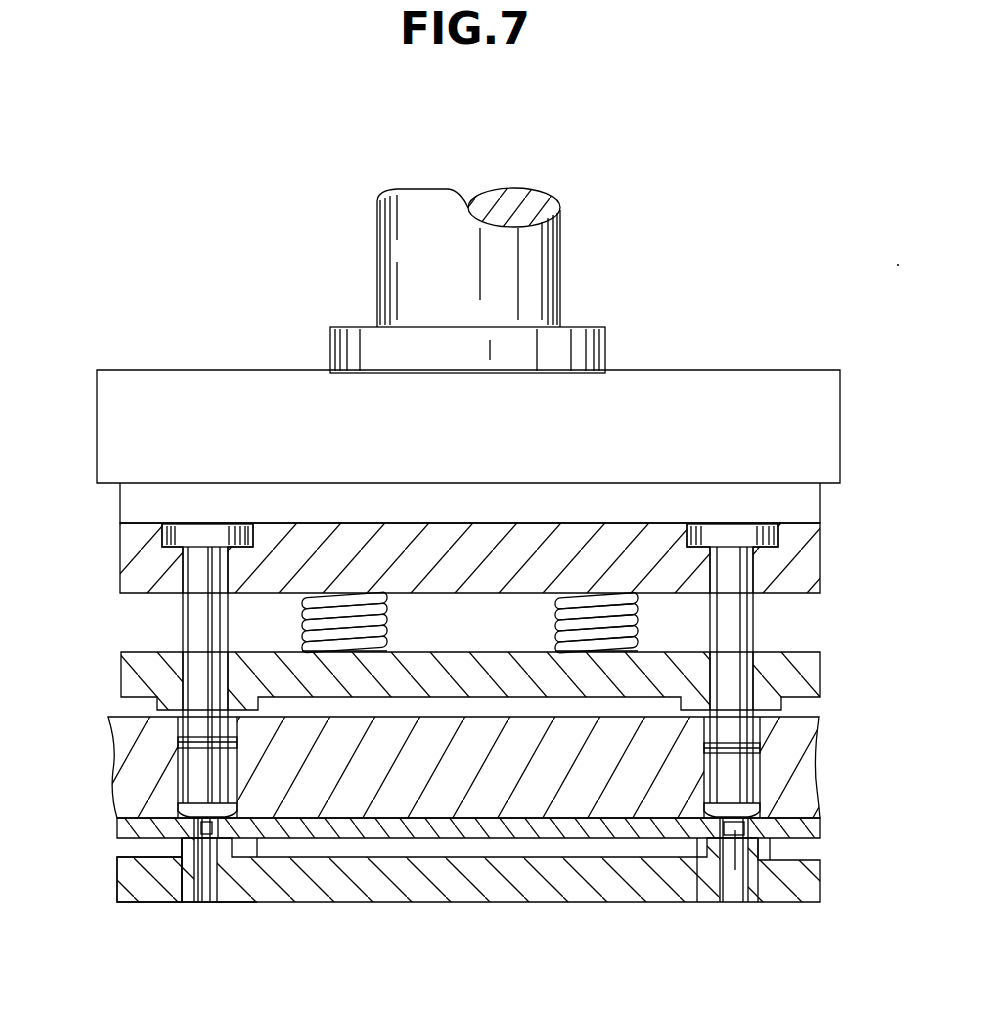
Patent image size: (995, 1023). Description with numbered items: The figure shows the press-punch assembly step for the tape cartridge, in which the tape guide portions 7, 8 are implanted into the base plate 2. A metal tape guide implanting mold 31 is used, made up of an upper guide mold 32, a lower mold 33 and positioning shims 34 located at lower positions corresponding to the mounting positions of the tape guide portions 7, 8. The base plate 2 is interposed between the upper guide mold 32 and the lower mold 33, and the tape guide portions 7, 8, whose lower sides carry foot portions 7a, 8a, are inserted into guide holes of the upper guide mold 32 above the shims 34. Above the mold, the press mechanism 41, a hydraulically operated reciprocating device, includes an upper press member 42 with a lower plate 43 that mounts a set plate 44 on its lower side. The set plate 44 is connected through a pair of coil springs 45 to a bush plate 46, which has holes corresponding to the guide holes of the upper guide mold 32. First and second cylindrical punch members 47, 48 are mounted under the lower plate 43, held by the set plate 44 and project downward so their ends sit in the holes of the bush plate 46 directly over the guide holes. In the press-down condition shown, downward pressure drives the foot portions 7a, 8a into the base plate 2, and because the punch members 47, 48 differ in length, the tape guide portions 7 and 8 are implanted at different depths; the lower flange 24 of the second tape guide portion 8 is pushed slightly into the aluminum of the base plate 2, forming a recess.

The press mechanism 41 is at (226, 236).
The upper press member 42 is at (128, 384).
The lower plate 43 is at (198, 495).
The set plate 44 is at (277, 550).
The coil spring 45 is at (357, 595).
The bush plate 46 is at (668, 668).
The first cylindrical punch member 47 is at (200, 566).
The second cylindrical punch member 48 is at (737, 567).
The tape guide portion 7 is at (202, 767).
The second tape guide portion 8 is at (735, 778).
The foot portion 7a is at (207, 885).
The foot portion 8a is at (737, 907).
The lower flange 24 is at (758, 818).
The base plate 2 is at (798, 832).
The tape guide implanting mold 31 is at (188, 953).
The upper guide mold 32 is at (137, 788).
The lower mold 33 is at (168, 890).
The positioning shim 34 is at (172, 843).